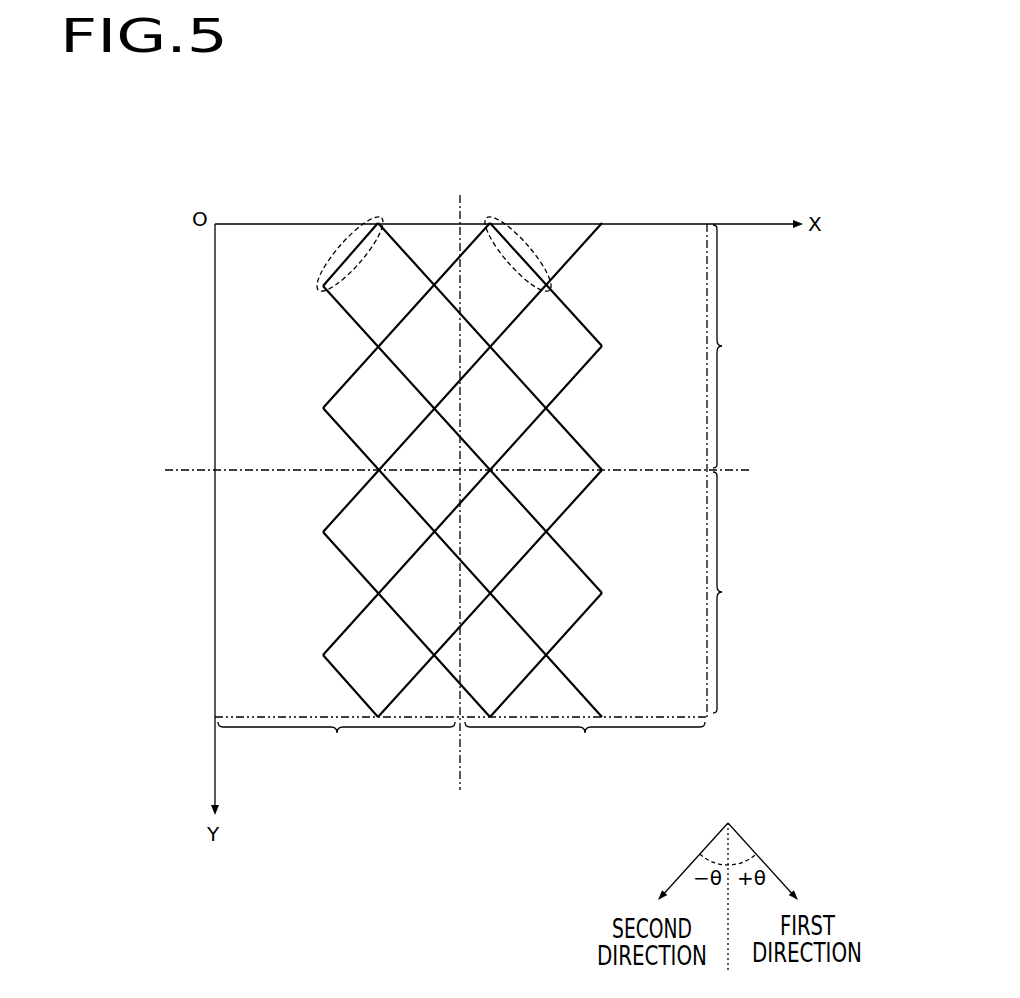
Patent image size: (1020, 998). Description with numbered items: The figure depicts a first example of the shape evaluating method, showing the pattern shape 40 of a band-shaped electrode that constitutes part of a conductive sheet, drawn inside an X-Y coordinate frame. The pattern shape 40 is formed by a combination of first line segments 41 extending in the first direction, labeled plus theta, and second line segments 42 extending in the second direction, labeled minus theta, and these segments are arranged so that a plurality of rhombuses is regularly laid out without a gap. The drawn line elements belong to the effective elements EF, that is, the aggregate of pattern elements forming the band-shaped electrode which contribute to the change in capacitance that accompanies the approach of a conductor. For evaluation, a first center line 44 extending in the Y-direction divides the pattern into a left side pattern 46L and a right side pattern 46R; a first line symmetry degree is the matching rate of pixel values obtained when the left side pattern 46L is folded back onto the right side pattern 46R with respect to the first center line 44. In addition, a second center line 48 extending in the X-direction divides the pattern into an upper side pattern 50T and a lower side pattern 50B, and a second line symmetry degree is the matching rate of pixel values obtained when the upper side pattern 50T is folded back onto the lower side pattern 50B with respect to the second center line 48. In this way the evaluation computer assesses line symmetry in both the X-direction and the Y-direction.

The pattern shape 40 is at (228, 188).
The first line segment 41 is at (535, 238).
The second line segment 42 is at (337, 238).
The effective elements EF is at (577, 248).
The first center line 44 is at (458, 752).
The second center line 48 is at (180, 470).
The upper side pattern 50T is at (745, 346).
The lower side pattern 50B is at (746, 592).
The left side pattern 46L is at (336, 745).
The right side pattern 46R is at (585, 744).